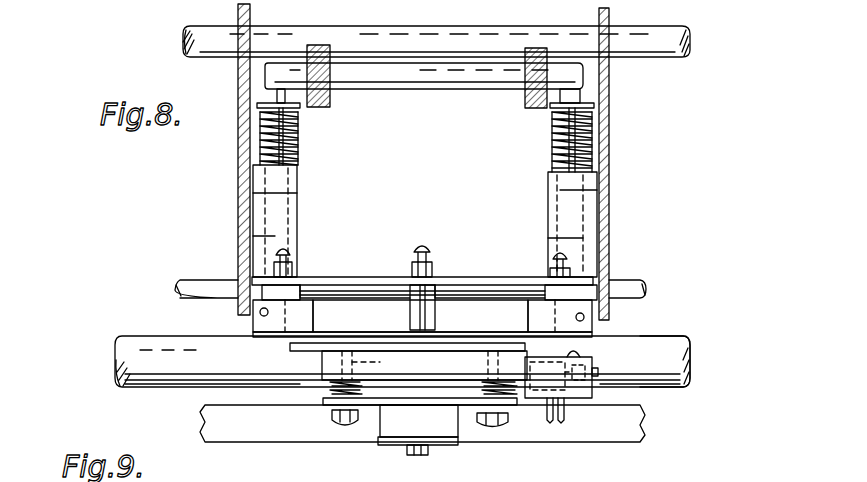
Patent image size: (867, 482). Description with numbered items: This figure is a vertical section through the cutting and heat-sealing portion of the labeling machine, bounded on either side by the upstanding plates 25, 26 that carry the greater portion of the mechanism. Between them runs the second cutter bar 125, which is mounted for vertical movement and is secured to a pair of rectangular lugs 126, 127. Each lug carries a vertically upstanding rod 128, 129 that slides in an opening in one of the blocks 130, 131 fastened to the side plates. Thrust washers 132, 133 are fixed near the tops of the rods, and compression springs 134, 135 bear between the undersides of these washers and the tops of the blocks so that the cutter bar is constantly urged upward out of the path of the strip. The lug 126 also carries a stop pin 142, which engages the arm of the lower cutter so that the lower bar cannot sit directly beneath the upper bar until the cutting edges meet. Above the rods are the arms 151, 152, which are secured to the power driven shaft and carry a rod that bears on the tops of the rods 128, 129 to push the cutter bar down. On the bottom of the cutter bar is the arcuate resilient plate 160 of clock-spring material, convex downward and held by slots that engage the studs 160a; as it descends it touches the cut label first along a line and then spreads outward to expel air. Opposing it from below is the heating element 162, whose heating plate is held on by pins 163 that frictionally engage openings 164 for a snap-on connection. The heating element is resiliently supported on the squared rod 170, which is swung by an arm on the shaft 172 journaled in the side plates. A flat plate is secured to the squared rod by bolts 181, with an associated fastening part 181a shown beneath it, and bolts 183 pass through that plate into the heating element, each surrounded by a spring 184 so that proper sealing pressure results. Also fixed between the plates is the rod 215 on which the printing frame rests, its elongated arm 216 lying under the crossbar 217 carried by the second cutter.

The upstanding plate 25 is at (609, 136).
The upstanding plate 26 is at (240, 198).
The second cutter bar 125 is at (360, 345).
The rectangular lug 126 is at (300, 312).
The rectangular lug 127 is at (540, 322).
The upstanding rod 128 is at (298, 131).
The upstanding rod 129 is at (585, 96).
The block 130 is at (297, 194).
The block 131 is at (548, 201).
The thrust washer 132 is at (300, 106).
The thrust washer 133 is at (550, 108).
The compression spring 134 is at (298, 153).
The compression spring 135 is at (552, 150).
The stop pin 142 is at (255, 312).
The arm 151 is at (536, 48).
The arm 152 is at (320, 45).
The arcuate resilient plate 160 is at (443, 342).
The stud 160a is at (265, 341).
The heating element 162 is at (424, 367).
The pin 163 is at (404, 90).
The opening 164 is at (396, 362).
The squared rod 170 is at (628, 433).
The shaft 172 is at (672, 350).
The bolt 181 is at (417, 456).
The washer plate 181a is at (390, 445).
The bolt 183 is at (332, 424).
The spring 184 is at (420, 417).
The rod 215 is at (203, 285).
The elongated arm 216 is at (422, 245).
The crossbar 217 is at (473, 277).